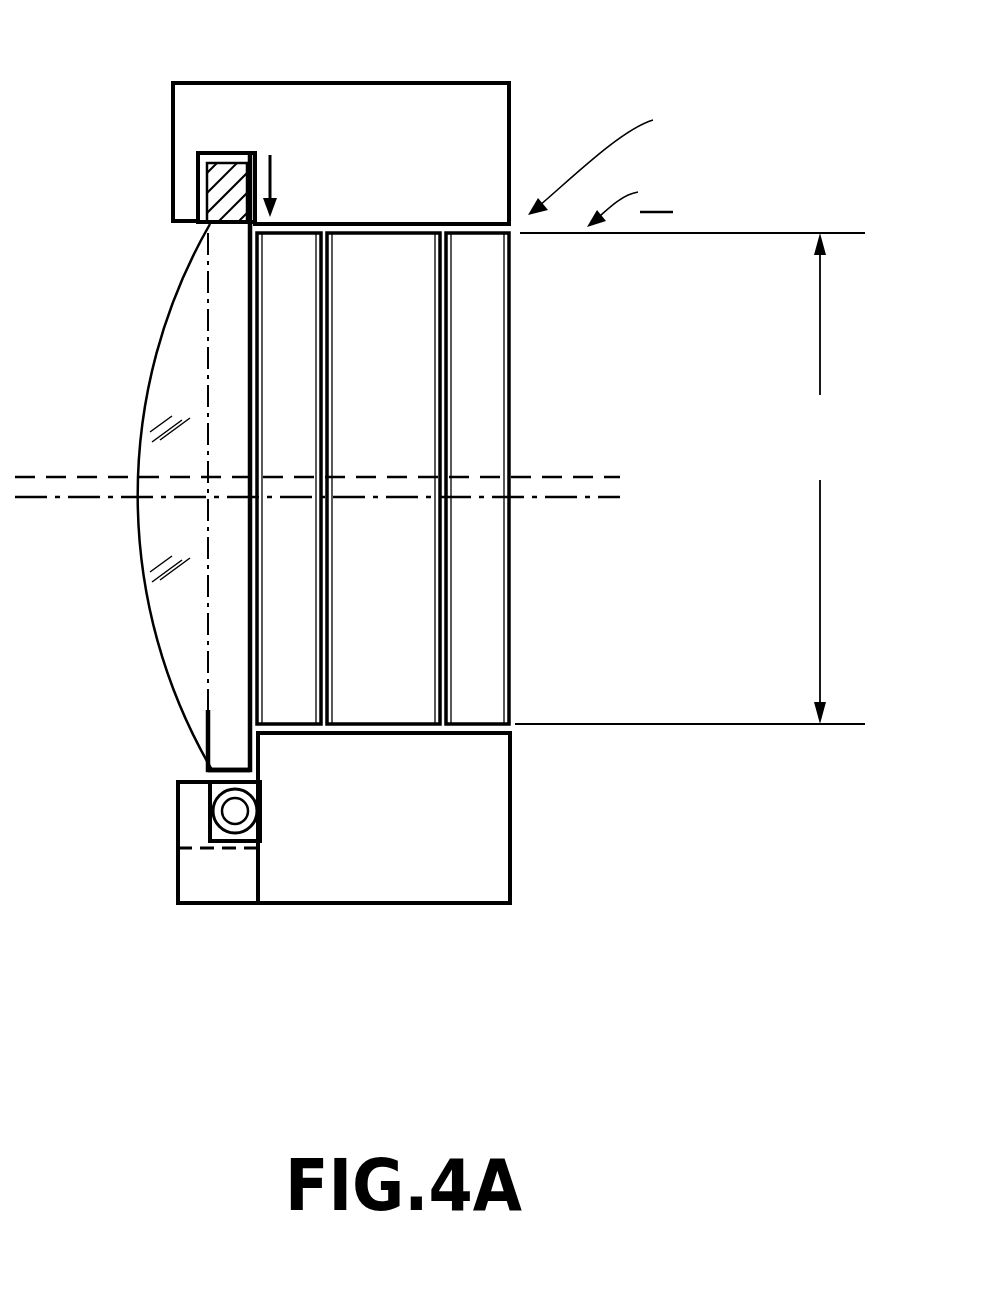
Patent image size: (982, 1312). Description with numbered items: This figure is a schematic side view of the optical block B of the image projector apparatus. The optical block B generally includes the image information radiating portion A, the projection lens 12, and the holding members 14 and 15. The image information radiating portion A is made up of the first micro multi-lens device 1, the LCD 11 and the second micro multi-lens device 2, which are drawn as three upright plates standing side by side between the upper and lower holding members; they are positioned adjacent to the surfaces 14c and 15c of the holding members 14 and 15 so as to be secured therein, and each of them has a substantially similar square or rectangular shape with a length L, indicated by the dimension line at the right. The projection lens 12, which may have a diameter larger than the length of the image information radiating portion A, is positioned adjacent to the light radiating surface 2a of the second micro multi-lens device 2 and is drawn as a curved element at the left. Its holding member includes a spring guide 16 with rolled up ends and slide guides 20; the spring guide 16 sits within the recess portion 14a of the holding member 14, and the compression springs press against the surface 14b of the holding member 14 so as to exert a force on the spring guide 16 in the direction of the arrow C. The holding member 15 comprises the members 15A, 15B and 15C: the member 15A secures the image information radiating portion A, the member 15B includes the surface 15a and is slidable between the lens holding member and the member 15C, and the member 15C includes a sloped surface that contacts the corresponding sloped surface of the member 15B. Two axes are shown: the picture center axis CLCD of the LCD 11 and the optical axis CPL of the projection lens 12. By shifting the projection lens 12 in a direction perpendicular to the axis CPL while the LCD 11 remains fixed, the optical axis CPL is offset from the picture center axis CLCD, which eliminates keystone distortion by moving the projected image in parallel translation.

The first micro multi-lens device 1 is at (497, 388).
The second micro multi-lens device 2 is at (277, 367).
The light radiating surface 2a is at (243, 663).
The LCD 11 is at (430, 328).
The projection lens 12 is at (168, 620).
The holding member 14 is at (510, 140).
The recess portion 14a is at (193, 220).
The surface 14b is at (203, 180).
The surface 14c is at (430, 193).
The holding member 15 is at (498, 817).
The surface 15a is at (230, 777).
The member 15A is at (482, 873).
The member 15B is at (213, 818).
The member 15C is at (192, 873).
The surface 15c is at (467, 730).
The spring guide 16 is at (233, 163).
The slide guides 20 is at (222, 338).
The image information radiating portion A is at (604, 156).
The optical block B is at (630, 196).
The arrow C direction C is at (275, 167).
The length L is at (690, 478).
The picture center axis CLCD is at (587, 477).
The optical axis CPL is at (600, 497).